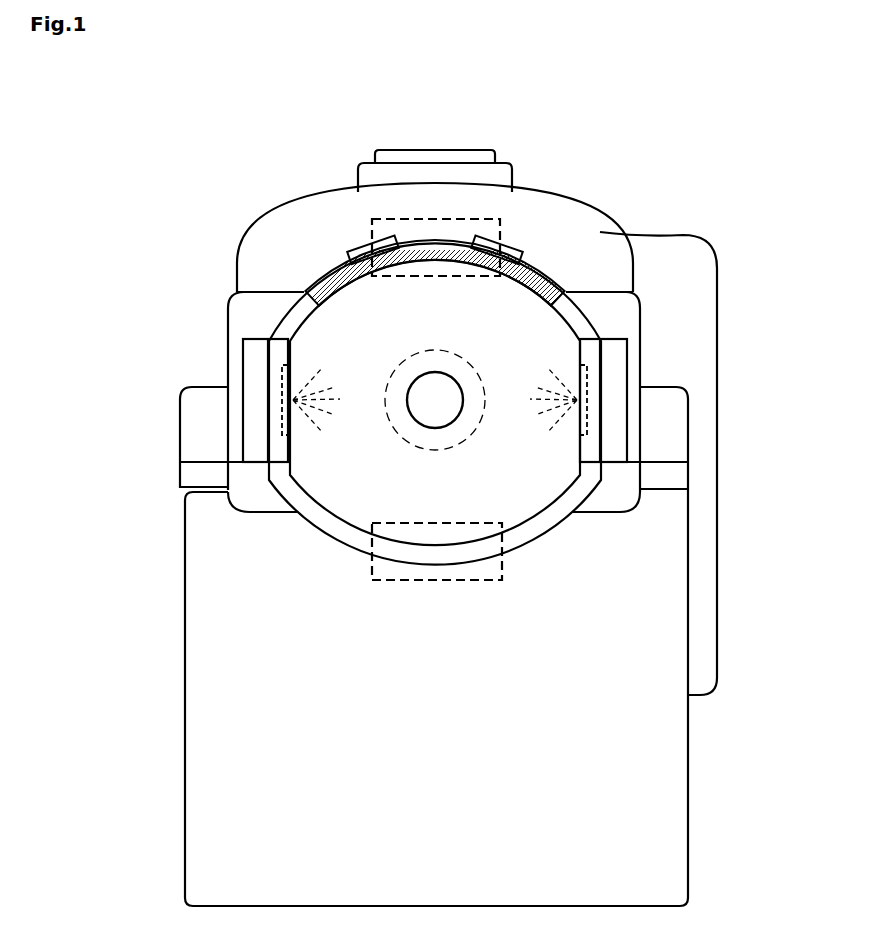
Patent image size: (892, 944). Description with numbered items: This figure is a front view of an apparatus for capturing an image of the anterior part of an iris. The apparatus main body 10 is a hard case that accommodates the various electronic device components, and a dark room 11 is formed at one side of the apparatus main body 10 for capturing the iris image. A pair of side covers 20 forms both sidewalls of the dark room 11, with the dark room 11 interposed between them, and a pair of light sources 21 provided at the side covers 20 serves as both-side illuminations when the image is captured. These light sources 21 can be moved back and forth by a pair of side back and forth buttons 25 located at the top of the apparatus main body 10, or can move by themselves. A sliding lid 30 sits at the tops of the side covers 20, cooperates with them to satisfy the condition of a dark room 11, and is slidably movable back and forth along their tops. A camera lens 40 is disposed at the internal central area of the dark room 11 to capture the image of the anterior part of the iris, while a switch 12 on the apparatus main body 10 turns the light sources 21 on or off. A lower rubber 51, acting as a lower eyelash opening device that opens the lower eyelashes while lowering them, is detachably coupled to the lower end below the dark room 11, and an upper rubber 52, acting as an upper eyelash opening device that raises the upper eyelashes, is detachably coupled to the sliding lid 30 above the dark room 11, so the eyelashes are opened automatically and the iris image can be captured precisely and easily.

The apparatus main body 10 is at (660, 795).
The dark room 11 is at (517, 512).
The switch 12 is at (440, 160).
The side covers 20 is at (277, 363).
The light sources 21 is at (283, 415).
The side back and forth buttons 25 is at (367, 240).
The sliding lid 30 is at (457, 247).
The camera lens 40 is at (425, 415).
The lower rubber 51 is at (443, 582).
The upper rubber 52 is at (443, 265).